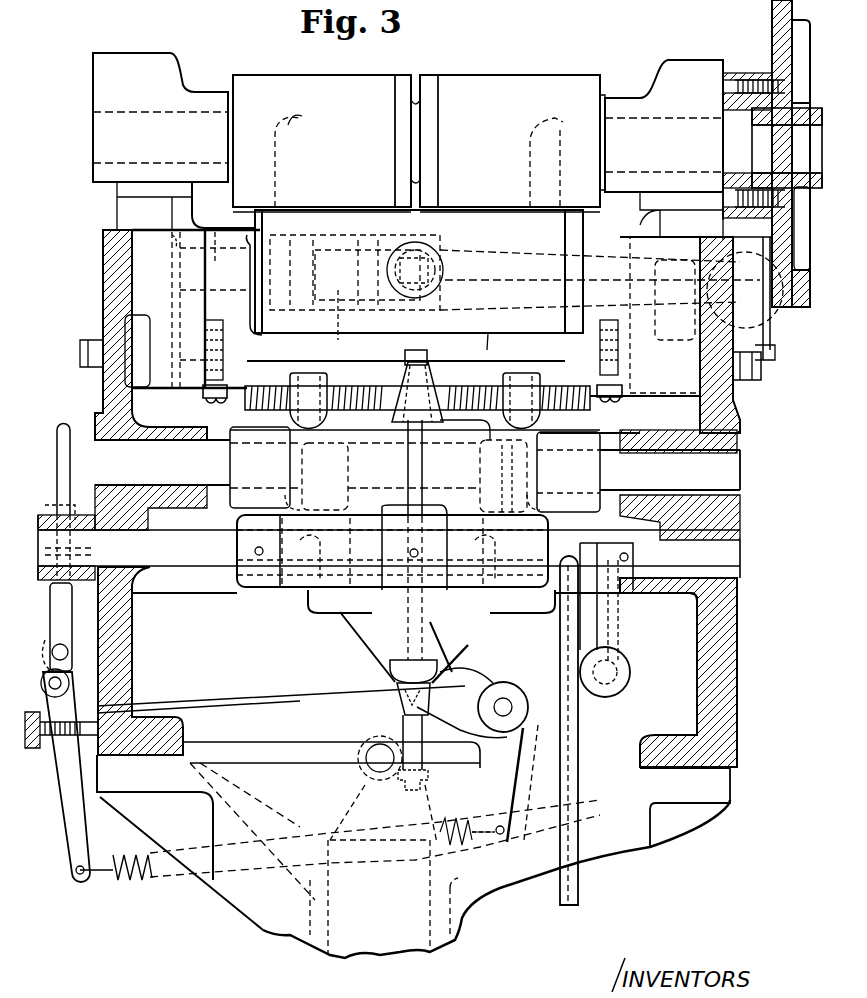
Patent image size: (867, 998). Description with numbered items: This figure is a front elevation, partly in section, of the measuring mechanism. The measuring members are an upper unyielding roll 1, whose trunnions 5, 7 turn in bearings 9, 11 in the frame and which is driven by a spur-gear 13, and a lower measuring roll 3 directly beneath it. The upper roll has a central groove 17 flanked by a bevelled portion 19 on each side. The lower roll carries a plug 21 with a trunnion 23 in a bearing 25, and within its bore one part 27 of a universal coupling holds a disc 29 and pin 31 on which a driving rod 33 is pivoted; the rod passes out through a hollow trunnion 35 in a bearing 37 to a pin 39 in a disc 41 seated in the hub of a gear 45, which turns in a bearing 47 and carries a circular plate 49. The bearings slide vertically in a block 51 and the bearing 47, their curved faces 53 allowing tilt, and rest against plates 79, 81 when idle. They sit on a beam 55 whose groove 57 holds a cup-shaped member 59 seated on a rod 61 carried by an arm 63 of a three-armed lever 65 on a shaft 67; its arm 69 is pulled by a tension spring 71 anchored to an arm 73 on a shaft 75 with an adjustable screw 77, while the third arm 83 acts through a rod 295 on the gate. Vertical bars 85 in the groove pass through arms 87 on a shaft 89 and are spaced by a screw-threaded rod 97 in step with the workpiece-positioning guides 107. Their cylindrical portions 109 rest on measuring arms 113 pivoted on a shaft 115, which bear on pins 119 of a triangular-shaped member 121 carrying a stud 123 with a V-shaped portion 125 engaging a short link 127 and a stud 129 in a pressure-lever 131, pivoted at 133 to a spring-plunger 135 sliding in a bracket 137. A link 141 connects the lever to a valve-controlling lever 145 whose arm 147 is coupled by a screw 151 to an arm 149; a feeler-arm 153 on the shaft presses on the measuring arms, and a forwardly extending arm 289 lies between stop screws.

The upper unyielding roll 1 is at (419, 129).
The lower measuring roll 3 is at (487, 348).
The trunnion 5 is at (198, 112).
The trunnion 7 is at (728, 135).
The bearing 9 is at (160, 105).
The bearing 11 is at (655, 78).
The spur-gear 13 is at (775, 15).
The groove 17 is at (416, 85).
The bevelled portion 19 is at (405, 78).
The plug 21 is at (278, 325).
The trunnion 23 is at (215, 232).
The bearing 25 is at (212, 307).
The part of universal coupling 27 is at (338, 340).
The disc 29 is at (442, 302).
The pin 31 is at (425, 240).
The driving rod 33 is at (485, 262).
The hollow trunnion 35 is at (590, 330).
The bearing 37 is at (598, 380).
The pin 39 is at (760, 320).
The disc 41 is at (760, 312).
The gear 45 is at (757, 380).
The bearing 47 is at (668, 218).
The circular plate 49 is at (762, 352).
The block 51 is at (145, 246).
The curved face 53 is at (172, 232).
The beam 55 is at (359, 372).
The groove 57 is at (432, 385).
The inverted cup-shaped member 59 is at (447, 430).
The rod 61 is at (414, 430).
The arm 63 is at (456, 680).
The three-armed lever 65 is at (505, 688).
The horizontal shaft 67 is at (508, 705).
The arm 69 is at (517, 752).
The tension spring 71 is at (138, 860).
The arm 73 is at (66, 812).
The horizontal shaft 75 is at (50, 655).
The adjustable screw 77 is at (40, 750).
The plate 79 is at (127, 190).
The plate 81 is at (690, 200).
The third arm 83 is at (203, 707).
The vertical bars 85 is at (328, 432).
The arms 87 is at (340, 496).
The horizontal shaft 89 is at (732, 470).
The right- and left-hand screw-threaded rod 97 is at (590, 430).
The workpiece-positioning guides 107 is at (305, 177).
The cylindrical portions 109 is at (300, 572).
The measuring arms 113 is at (283, 582).
The horizontal rotatably mounted shaft 115 is at (736, 560).
The pins 119 is at (313, 587).
The triangular-shaped member 121 is at (365, 650).
The stud 123 is at (398, 688).
The V-shaped lower end portion 125 is at (398, 700).
The short link 127 is at (420, 729).
The stud 129 is at (418, 790).
The pressure-lever 131 is at (533, 792).
The pivotal connection 133 is at (370, 757).
The spring-plunger 135 is at (398, 950).
The bracket 137 is at (480, 895).
The link 141 is at (590, 744).
The valve-controlling lever 145 is at (626, 588).
The downwardly extending arm 147 is at (606, 634).
The downwardly extending arm 149 is at (572, 814).
The screw 151 is at (612, 686).
The feeler-arm 153 is at (393, 585).
The forwardly extending arm 289 is at (45, 515).
The rod 295 is at (57, 440).